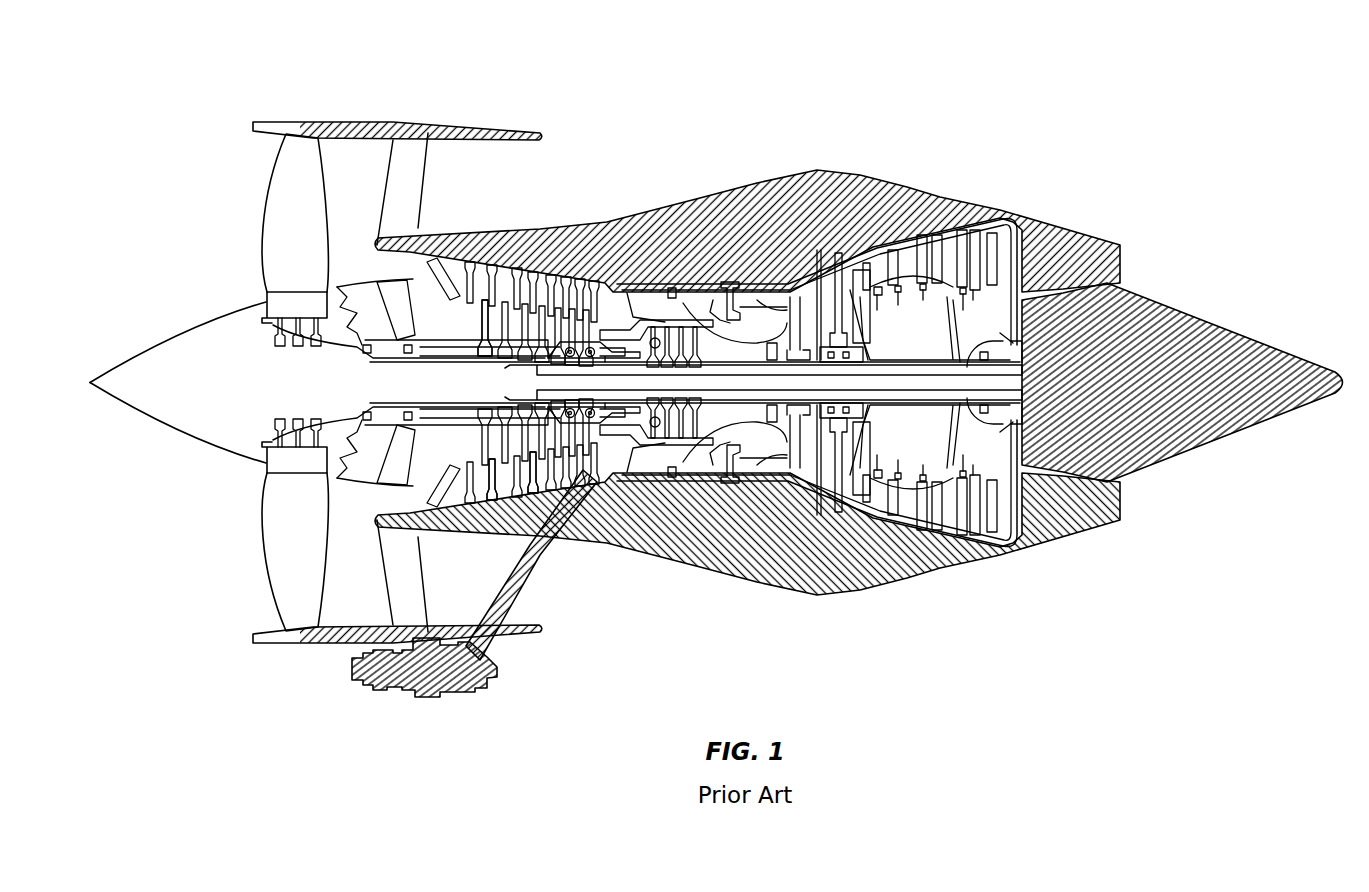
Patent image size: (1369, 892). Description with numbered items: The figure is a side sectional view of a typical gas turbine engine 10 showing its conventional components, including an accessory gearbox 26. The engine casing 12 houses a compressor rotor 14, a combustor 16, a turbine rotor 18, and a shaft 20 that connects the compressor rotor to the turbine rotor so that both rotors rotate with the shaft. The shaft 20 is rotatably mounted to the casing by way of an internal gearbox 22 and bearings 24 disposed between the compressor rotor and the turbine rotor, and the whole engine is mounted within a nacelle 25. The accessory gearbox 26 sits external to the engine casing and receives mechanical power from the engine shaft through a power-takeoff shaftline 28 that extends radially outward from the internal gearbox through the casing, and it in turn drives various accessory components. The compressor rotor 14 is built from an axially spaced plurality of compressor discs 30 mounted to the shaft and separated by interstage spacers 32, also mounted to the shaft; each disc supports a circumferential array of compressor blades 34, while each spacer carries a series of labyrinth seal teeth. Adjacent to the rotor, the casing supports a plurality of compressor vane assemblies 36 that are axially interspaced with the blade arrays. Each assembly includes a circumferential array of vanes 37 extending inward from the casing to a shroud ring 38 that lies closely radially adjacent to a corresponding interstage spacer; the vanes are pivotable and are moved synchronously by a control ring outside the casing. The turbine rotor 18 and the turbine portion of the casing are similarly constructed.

The gas turbine engine 10 is at (716, 412).
The engine casing 12 is at (975, 214).
The compressor rotor 14 is at (570, 345).
The combustor 16 is at (761, 307).
The turbine rotor 18 is at (873, 360).
The shaft 20 is at (917, 384).
The internal gearbox 22 is at (634, 425).
The bearings 24 is at (634, 447).
The nacelle 25 is at (347, 122).
The accessory gearbox 26 is at (427, 700).
The power-takeoff shaftline 28 is at (595, 497).
The compressor discs 30 is at (481, 327).
The interstage spacers 32 is at (517, 266).
The compressor blades 34 is at (490, 472).
The compressor vane assemblies 36 is at (513, 475).
The vanes 37 is at (513, 457).
The shroud ring 38 is at (528, 480).